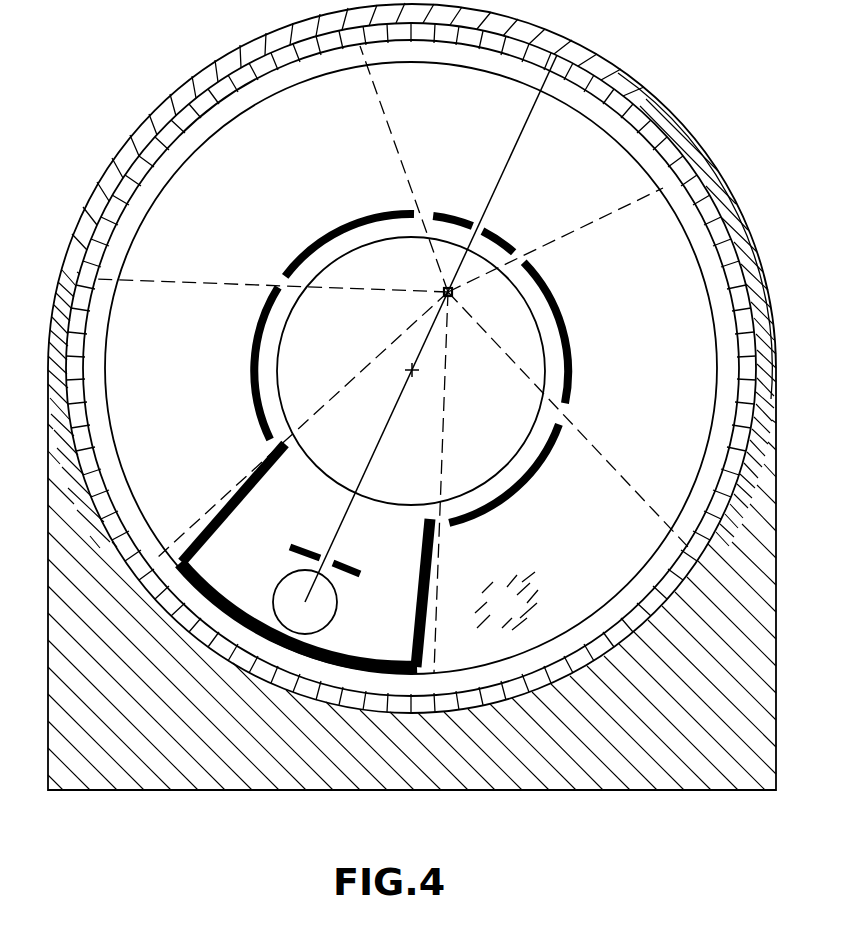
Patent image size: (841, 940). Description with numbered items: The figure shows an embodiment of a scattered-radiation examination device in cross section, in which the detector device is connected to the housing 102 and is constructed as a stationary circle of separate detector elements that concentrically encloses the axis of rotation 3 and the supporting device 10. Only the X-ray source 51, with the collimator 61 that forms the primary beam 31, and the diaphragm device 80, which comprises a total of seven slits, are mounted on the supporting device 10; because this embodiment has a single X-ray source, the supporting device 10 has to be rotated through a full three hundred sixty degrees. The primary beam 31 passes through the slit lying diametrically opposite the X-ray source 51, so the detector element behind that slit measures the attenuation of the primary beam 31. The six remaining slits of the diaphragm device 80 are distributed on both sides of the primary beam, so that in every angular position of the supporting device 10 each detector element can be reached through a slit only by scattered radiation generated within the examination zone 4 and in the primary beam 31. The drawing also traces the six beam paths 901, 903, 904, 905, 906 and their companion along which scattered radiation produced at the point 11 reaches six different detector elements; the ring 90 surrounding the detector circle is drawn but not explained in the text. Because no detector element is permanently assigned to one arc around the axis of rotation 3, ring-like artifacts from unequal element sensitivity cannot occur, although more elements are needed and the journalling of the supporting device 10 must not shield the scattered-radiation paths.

The axis of rotation 3 is at (416, 374).
The examination zone 4 is at (378, 500).
The supporting device 10 is at (506, 601).
The point 11 is at (442, 296).
The primary beam 31 is at (339, 538).
The X-ray source 51 is at (335, 616).
The collimator 61 is at (360, 575).
The diaphragm device 80 is at (337, 231).
The brick lining 90 is at (580, 678).
The housing 102 is at (412, 396).
The beam path 901 is at (497, 346).
The beam path 903 is at (487, 274).
The beam path 904 is at (427, 241).
The beam path 905 is at (343, 287).
The beam path 906 is at (358, 377).